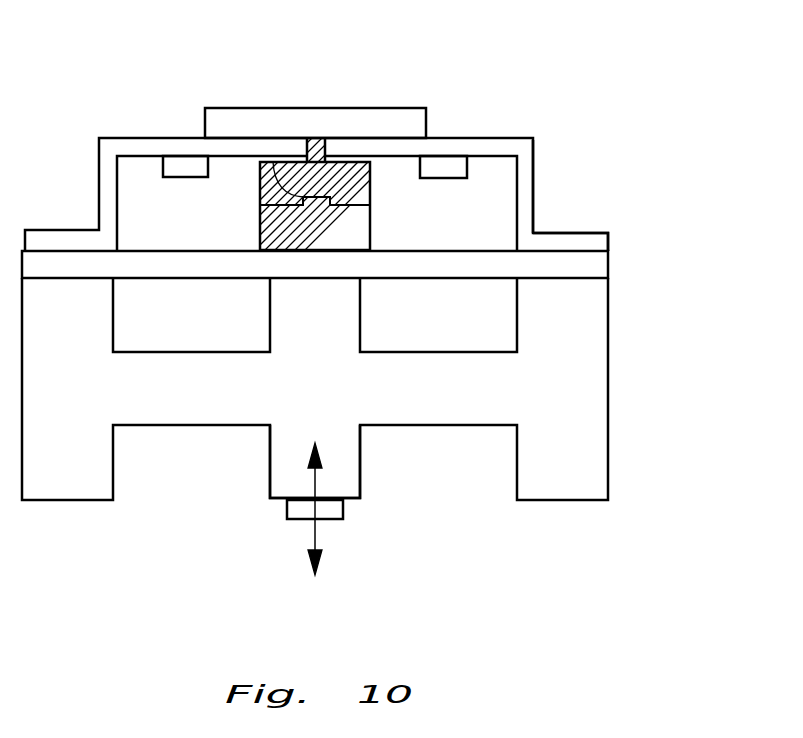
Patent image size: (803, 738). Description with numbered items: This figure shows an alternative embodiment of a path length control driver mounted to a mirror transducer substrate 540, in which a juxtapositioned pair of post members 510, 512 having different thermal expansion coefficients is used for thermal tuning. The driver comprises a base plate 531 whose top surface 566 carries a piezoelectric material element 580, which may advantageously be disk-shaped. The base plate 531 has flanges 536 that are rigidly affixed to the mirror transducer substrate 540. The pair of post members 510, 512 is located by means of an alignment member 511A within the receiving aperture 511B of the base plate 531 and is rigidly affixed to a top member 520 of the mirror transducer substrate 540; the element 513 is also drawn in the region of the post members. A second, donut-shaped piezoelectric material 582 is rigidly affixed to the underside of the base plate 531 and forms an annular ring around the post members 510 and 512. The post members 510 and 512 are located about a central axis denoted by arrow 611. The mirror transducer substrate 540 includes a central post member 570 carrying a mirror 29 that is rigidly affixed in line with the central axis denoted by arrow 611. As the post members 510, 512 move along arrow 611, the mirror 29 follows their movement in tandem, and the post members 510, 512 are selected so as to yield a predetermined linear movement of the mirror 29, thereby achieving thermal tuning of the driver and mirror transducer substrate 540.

The mirror 29 is at (329, 520).
The post member 510 is at (371, 188).
The alignment member 511A is at (313, 140).
The receiving aperture 511B is at (328, 140).
The post member 512 is at (371, 218).
The layer 513 is at (273, 162).
The top member 520 is at (608, 268).
The base plate 531 is at (534, 176).
The flanges 536 is at (572, 233).
The mirror transducer substrate 540 is at (656, 388).
The top surface 566 is at (468, 138).
The central post member 570 is at (345, 469).
The piezoelectric material element 580 is at (367, 108).
The second piezoelectric donut-shaped material 582 is at (174, 177).
The arrow 611 is at (311, 534).